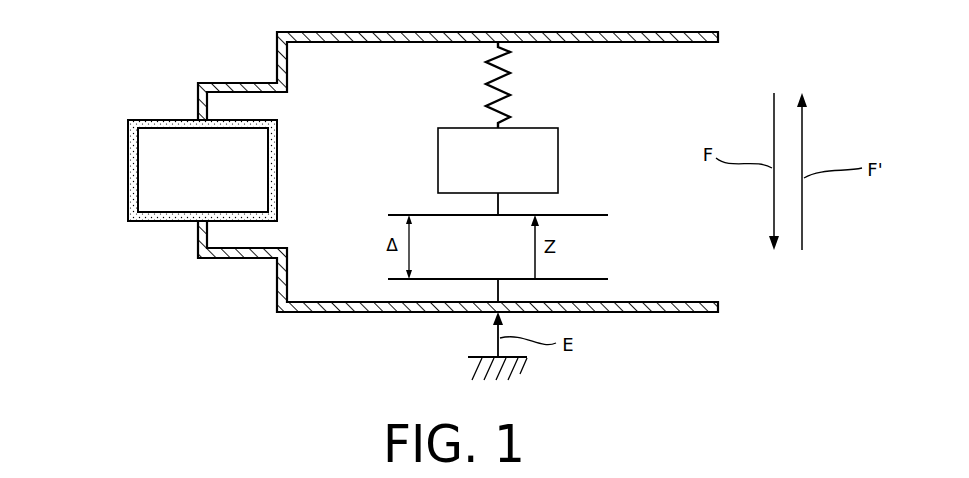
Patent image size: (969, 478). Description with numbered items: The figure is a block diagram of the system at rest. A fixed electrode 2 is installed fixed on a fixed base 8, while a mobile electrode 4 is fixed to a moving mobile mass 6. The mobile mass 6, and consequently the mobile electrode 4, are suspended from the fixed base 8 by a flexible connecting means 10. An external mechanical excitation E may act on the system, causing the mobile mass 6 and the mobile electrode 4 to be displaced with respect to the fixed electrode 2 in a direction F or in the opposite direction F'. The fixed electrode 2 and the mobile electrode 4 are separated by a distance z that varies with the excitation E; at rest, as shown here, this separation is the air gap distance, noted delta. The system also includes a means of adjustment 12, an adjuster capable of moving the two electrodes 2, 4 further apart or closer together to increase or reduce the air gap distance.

The fixed electrode 2 is at (588, 278).
The mobile electrode 4 is at (588, 214).
The mobile mass 6 is at (548, 162).
The fixed base 8 is at (348, 312).
The flexible connecting means 10 is at (504, 88).
The means of adjustment 12 is at (119, 181).